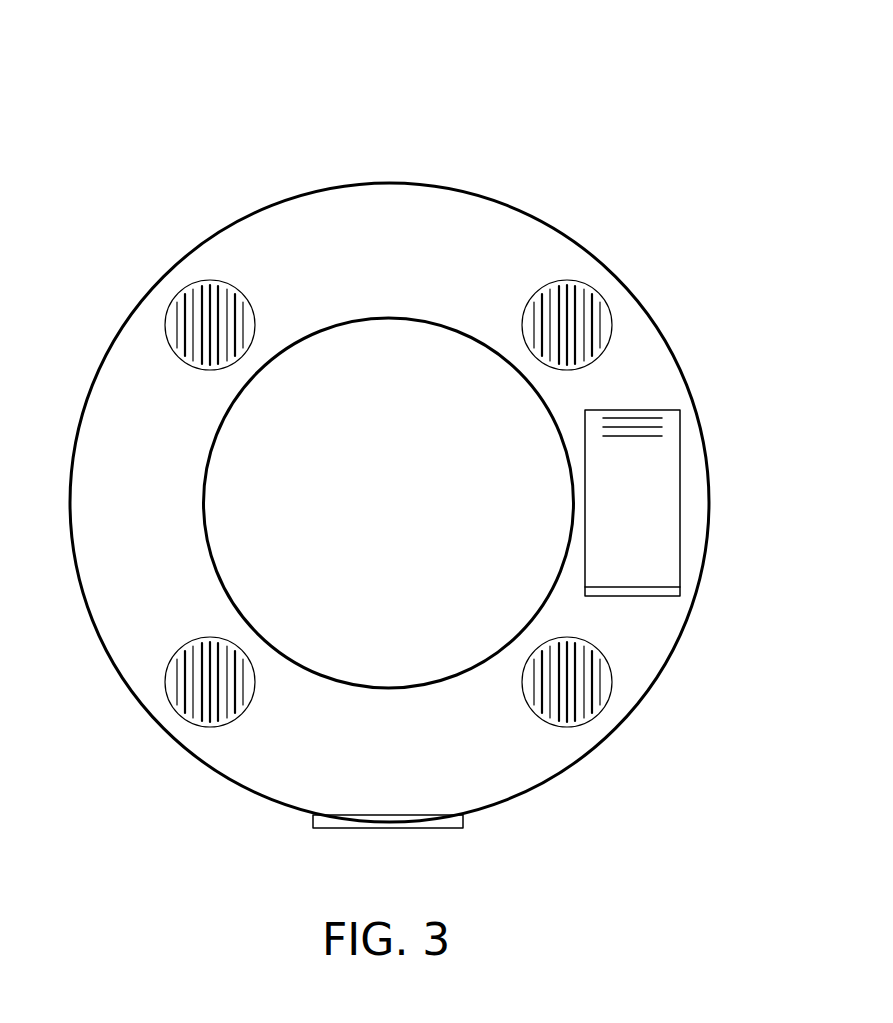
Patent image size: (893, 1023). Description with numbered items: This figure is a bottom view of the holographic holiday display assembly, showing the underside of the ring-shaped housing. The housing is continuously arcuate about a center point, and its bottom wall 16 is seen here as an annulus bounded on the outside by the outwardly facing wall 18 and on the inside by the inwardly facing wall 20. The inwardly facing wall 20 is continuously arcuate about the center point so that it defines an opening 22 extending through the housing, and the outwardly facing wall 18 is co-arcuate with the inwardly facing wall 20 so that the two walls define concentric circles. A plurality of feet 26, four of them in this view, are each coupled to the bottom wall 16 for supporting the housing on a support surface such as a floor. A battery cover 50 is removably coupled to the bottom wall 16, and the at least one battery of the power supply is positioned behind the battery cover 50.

The bottom wall 16 is at (383, 207).
The outwardly facing wall 18 is at (247, 790).
The inwardly facing wall 20 is at (387, 318).
The opening 22 is at (387, 608).
The feet 26 is at (188, 287).
The battery cover 50 is at (632, 410).